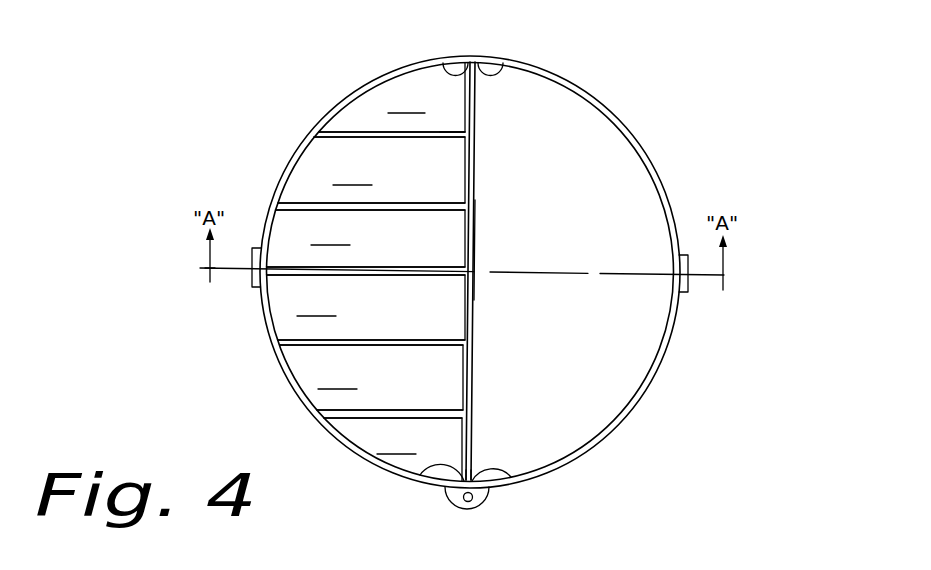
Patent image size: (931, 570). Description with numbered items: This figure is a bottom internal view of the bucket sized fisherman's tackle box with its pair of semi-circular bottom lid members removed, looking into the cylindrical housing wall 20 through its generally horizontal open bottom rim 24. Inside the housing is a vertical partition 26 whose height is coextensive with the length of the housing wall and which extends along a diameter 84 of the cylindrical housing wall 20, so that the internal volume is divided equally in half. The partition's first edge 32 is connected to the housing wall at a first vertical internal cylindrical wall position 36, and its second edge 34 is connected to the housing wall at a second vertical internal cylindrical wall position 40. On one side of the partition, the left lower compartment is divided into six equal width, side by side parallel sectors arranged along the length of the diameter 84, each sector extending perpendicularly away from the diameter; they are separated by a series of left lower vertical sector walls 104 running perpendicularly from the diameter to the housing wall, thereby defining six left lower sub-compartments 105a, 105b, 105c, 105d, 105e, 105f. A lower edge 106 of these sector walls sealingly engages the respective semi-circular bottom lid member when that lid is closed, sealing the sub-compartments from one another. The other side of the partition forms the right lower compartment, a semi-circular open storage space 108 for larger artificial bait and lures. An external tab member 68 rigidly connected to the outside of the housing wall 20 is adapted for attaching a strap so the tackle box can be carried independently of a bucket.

The cylindrical housing wall 20 is at (646, 150).
The open bottom rim 24 is at (634, 422).
The vertical partition 26 is at (487, 240).
The first edge 32 is at (504, 62).
The second edge 34 is at (512, 477).
The first vertical internal cylindrical wall position 36 is at (448, 121).
The second vertical internal cylindrical wall position 40 is at (452, 474).
The external tab member 68 is at (474, 502).
The diameter 84 is at (488, 108).
The left lower vertical sector walls 104 is at (460, 64).
The left lower sub-compartment 105a is at (393, 449).
The left lower sub-compartment 105b is at (372, 377).
The left lower sub-compartment 105c is at (366, 307).
The left lower sub-compartment 105d is at (366, 238).
The left lower sub-compartment 105e is at (371, 170).
The left lower sub-compartment 105f is at (392, 97).
The lower edge 106 is at (433, 202).
The semi-circular open storage space 108 is at (571, 349).